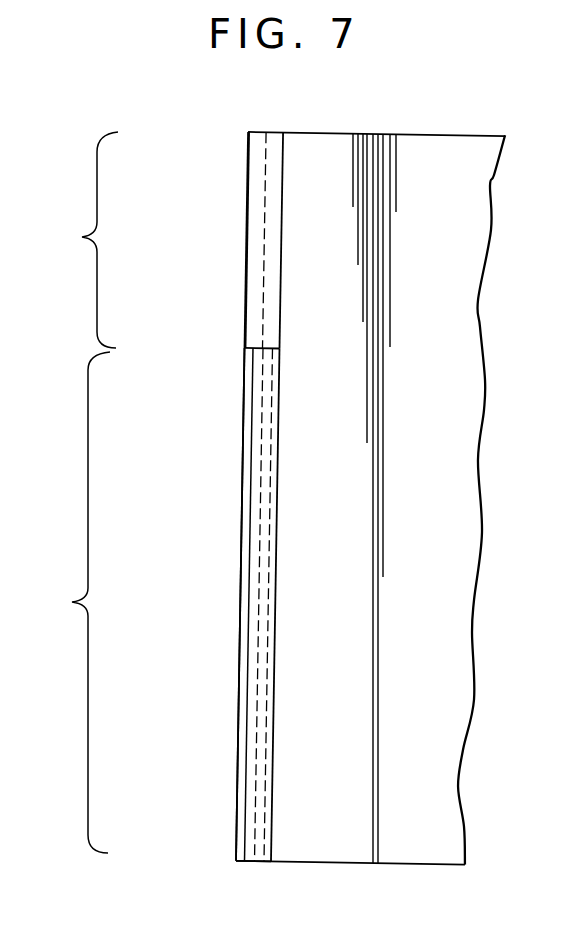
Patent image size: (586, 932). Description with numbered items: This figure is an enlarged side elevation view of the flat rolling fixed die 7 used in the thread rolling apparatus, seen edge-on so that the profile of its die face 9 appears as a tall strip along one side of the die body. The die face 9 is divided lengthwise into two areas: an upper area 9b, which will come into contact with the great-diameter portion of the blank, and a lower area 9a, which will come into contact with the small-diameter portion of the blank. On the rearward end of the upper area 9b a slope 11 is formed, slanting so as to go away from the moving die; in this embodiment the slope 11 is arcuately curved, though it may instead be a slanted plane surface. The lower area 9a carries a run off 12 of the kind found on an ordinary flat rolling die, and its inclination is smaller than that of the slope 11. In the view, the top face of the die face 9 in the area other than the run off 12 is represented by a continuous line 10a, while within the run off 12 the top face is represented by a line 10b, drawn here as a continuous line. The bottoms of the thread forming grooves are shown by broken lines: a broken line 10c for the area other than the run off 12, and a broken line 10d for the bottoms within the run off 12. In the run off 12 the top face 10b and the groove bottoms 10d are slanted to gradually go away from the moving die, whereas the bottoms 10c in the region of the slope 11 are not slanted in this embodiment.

The flat rolling fixed die 7 is at (240, 122).
The die face 9 is at (243, 447).
The area of the die face 9a is at (67, 602).
The area of the die face 9b is at (73, 240).
The continuous line representing the top face of the die face 10a is at (245, 212).
The top face of the die face in the run off 10b is at (248, 563).
The bottoms of the thread forming grooves 10c is at (262, 284).
The bottoms of the thread forming grooves in the run off 10d is at (262, 741).
The slope 11 is at (252, 162).
The run off 12 is at (246, 813).